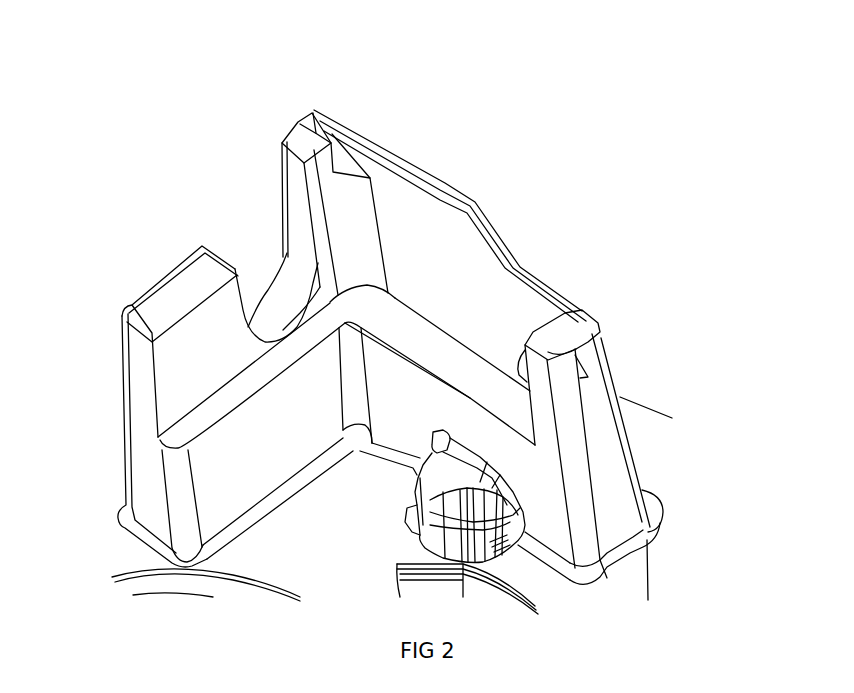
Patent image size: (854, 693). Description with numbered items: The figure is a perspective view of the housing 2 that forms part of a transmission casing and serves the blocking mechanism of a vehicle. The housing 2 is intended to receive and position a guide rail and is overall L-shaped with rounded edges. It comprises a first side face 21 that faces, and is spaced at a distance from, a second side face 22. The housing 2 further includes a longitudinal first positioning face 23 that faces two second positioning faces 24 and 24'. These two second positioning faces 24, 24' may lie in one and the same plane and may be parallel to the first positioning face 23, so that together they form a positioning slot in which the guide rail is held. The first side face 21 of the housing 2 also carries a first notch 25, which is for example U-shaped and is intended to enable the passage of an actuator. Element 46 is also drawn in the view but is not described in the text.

The housing 2 is at (432, 158).
The first side face 21 is at (207, 347).
The second side face 22 is at (458, 342).
The first positioning face 23 is at (455, 262).
The second positioning face 24 is at (630, 407).
The second positioning face 24' is at (370, 165).
The first notch 25 is at (287, 292).
The fastener boss 46 is at (452, 363).